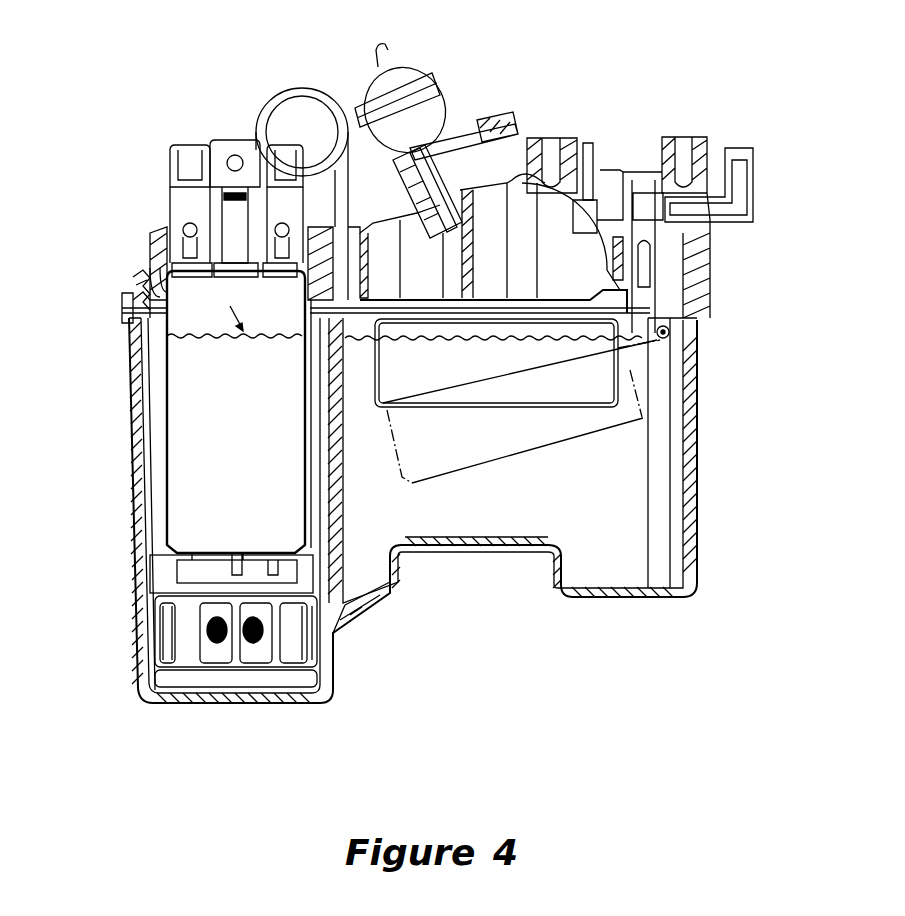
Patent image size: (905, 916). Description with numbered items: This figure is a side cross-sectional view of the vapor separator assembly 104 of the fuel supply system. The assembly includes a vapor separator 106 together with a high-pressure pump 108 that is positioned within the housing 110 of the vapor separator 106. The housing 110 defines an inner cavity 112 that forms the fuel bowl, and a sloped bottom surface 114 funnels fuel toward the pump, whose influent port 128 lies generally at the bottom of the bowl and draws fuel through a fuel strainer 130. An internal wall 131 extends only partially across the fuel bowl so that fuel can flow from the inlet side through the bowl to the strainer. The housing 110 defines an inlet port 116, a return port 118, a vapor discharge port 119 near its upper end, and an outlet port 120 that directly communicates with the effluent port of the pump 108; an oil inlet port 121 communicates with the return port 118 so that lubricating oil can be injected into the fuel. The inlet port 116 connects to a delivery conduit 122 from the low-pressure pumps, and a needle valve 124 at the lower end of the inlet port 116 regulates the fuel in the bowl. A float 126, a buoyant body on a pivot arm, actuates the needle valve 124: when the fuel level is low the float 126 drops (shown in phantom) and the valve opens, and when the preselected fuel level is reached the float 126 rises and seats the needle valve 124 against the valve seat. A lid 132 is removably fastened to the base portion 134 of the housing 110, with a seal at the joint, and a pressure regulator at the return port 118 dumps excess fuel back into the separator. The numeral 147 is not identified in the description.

The vapor separator assembly 104 is at (663, 78).
The vapor separator 106 is at (727, 368).
The high-pressure pump 108 is at (182, 493).
The housing 110 is at (698, 474).
The inner cavity 112 is at (465, 525).
The sloped bottom surface 114 is at (375, 597).
The inlet port 116 is at (717, 207).
The return port 118 is at (370, 92).
The vapor discharge port 119 is at (590, 213).
The outlet port 120 is at (235, 213).
The oil inlet port 121 is at (517, 127).
The delivery conduit 122 is at (750, 163).
The needle valve 124 is at (665, 302).
The float 126 is at (333, 408).
The influent port 128 is at (210, 580).
The fuel strainer 130 is at (255, 658).
The internal wall 131 is at (340, 523).
The lid 132 is at (150, 250).
The base portion 134 is at (130, 337).
The float 147 is at (443, 93).